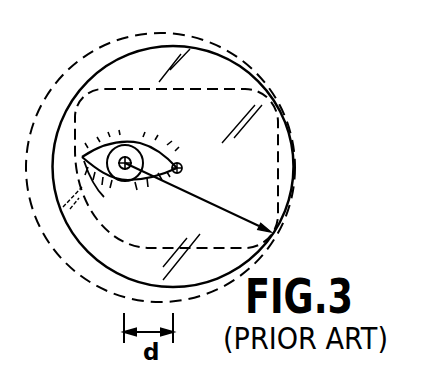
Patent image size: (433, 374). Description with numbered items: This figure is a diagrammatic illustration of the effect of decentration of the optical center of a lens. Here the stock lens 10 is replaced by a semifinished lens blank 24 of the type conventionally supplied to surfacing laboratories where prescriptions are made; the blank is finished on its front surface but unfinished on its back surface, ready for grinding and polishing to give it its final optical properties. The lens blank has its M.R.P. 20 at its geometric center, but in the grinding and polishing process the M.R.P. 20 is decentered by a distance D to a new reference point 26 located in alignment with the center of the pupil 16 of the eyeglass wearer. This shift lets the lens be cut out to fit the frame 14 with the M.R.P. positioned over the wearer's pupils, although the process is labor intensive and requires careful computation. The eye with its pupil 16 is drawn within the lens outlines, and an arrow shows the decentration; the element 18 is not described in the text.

The stock lens 10 is at (78, 57).
The frame 14 is at (227, 90).
The pupil 16 is at (123, 183).
The eye 18 is at (85, 194).
The M.R.P. 20 is at (182, 169).
The semifinished lens blank 24 is at (201, 47).
The new reference point 26 is at (131, 158).